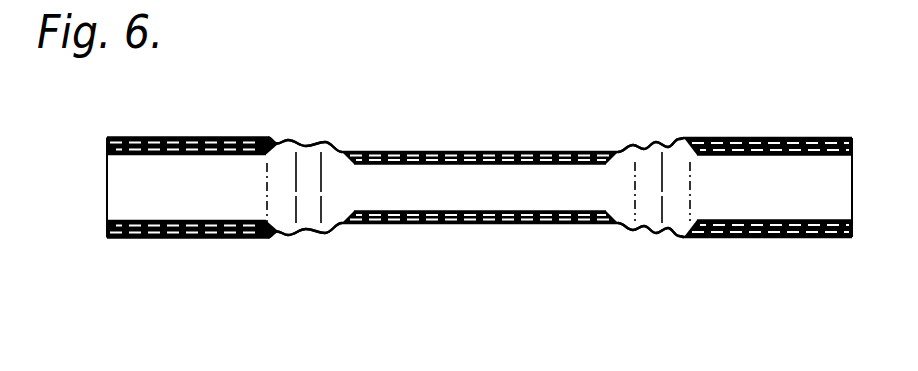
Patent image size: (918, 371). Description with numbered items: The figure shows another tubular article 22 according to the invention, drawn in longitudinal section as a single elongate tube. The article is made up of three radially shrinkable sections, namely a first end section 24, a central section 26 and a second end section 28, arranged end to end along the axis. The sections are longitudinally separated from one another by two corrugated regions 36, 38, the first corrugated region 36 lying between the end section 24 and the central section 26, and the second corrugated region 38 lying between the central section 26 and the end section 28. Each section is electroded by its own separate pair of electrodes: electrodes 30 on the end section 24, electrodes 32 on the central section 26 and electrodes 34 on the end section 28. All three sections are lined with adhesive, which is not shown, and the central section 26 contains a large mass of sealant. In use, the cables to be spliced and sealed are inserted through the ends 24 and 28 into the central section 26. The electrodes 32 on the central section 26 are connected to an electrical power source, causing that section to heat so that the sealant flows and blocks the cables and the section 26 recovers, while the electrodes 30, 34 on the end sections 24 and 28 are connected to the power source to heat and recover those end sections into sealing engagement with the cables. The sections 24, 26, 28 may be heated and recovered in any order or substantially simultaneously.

The tubular article 22 is at (620, 120).
The radially shrinkable end section 24 is at (173, 195).
The central section 26 is at (483, 190).
The radially shrinkable end section 28 is at (763, 188).
The electrodes 30 is at (182, 138).
The electrodes 32 is at (473, 157).
The electrodes 34 is at (773, 143).
The corrugated region 36 is at (308, 142).
The corrugated region 38 is at (652, 143).